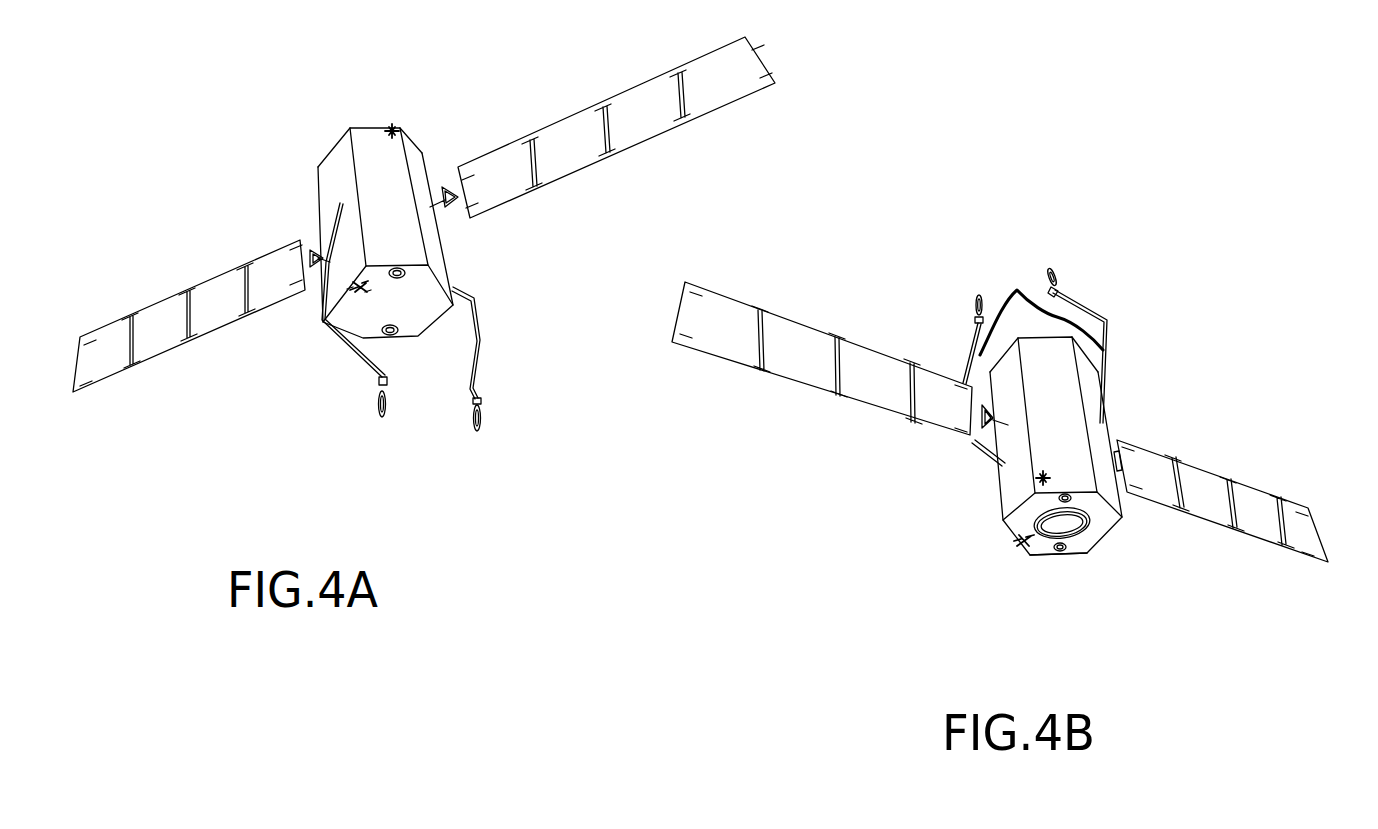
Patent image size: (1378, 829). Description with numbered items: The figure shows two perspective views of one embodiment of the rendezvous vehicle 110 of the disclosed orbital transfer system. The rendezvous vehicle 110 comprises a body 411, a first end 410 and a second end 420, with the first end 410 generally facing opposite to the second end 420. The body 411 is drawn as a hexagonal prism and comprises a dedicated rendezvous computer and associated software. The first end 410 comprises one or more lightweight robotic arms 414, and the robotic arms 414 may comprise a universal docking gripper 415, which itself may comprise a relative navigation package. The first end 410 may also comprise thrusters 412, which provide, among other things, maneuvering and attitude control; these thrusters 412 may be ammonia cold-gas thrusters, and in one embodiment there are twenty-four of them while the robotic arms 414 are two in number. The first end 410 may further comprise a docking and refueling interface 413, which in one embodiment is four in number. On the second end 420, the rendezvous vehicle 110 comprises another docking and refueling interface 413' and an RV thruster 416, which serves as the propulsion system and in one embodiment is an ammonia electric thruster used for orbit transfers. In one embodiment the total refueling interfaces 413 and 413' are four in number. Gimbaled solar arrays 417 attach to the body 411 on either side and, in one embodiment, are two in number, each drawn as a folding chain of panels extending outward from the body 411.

In FIG. 4A, the rendezvous vehicle 110 is at (273, 78).
In FIG. 4B, the rendezvous vehicle 110 is at (927, 287).
In FIG. 4A, the first end 410 is at (412, 352).
In FIG. 4A, the body 411 is at (332, 173).
In FIG. 4A, the thrusters 412 is at (358, 289).
In FIG. 4A, the docking and refueling interface 413 is at (442, 287).
In FIG. 4B, the docking and refueling interface 413' is at (1122, 522).
In FIG. 4A, the robotic arms 414 is at (480, 322).
In FIG. 4B, the robotic arms 414 is at (1033, 320).
In FIG. 4B, the universal docking gripper 415 is at (1055, 277).
In FIG. 4B, the RV thruster 416 is at (1060, 527).
In FIG. 4B, the gimbaled solar arrays 417 is at (1243, 495).
In FIG. 4B, the second end 420 is at (1095, 558).